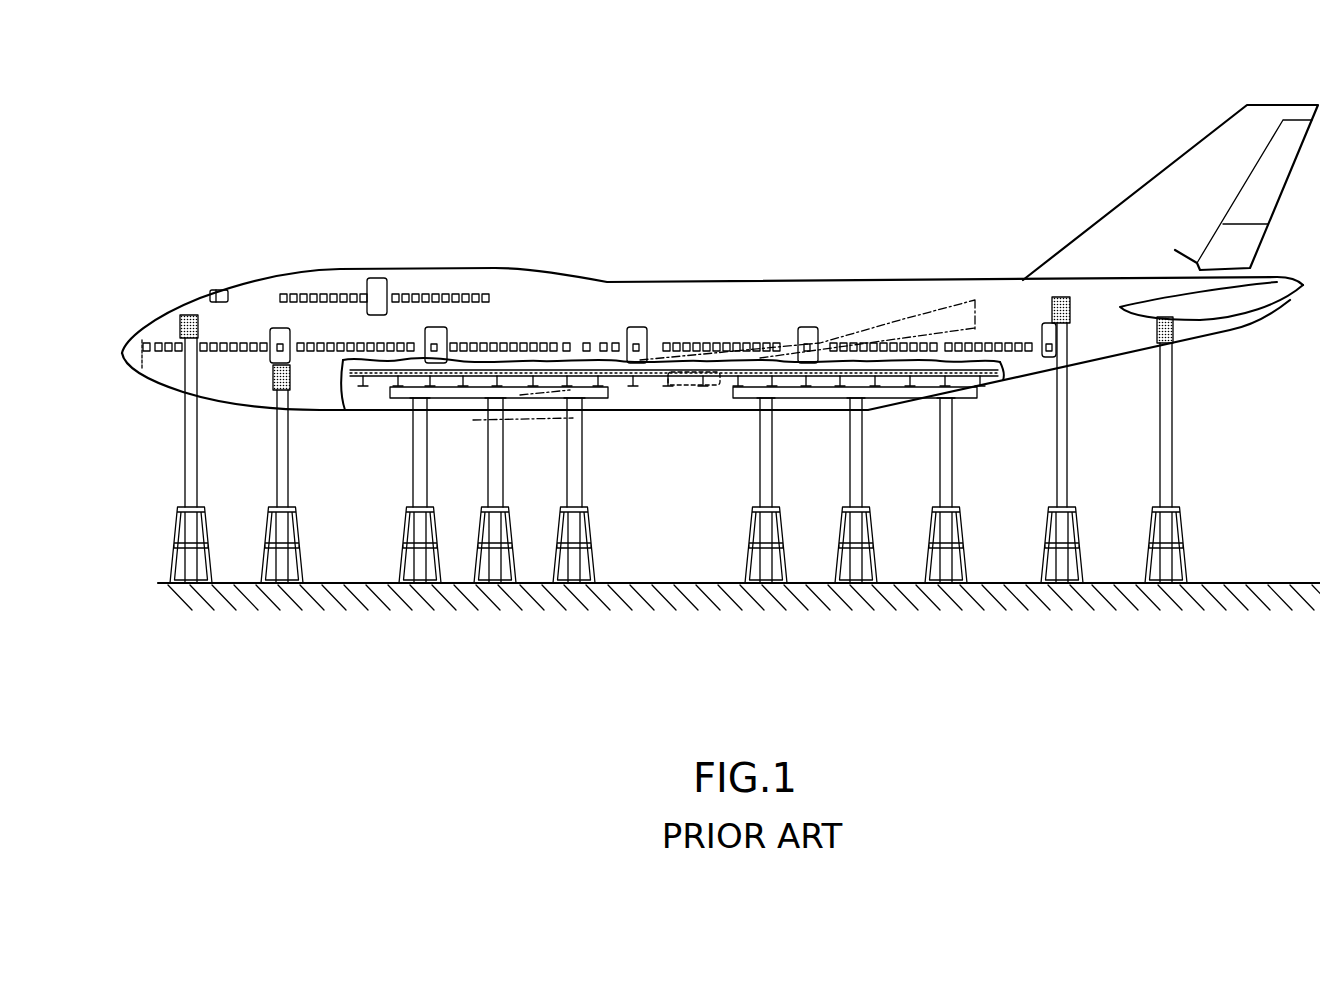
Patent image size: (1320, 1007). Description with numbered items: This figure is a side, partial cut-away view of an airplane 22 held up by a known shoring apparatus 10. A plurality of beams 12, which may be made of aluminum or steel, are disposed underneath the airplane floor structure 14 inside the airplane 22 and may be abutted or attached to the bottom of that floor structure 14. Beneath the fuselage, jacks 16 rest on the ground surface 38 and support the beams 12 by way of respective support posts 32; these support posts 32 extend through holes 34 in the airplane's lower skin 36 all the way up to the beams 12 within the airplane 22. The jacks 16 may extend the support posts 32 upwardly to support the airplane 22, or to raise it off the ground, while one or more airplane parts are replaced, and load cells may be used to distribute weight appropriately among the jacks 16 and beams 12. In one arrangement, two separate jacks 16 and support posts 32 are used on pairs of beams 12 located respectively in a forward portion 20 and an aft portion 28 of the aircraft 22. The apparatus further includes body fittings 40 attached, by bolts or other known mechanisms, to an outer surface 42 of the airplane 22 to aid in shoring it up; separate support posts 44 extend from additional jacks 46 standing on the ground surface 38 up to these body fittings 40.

The aircraft support system 10 is at (822, 633).
The beams 12 is at (500, 387).
The airplane floor structure 14 is at (597, 357).
The jacks 16 is at (590, 547).
The forward portion 20 is at (402, 282).
The airplane 22 is at (303, 291).
The aft portion 28 is at (905, 300).
The support posts 32 is at (427, 447).
The holes 34 is at (398, 400).
The lower skin 36 is at (472, 400).
The ground surface 38 is at (1262, 590).
The body fittings 40 is at (182, 318).
The outer surface 42 is at (245, 323).
The support posts 44 is at (182, 442).
The jacks 46 is at (168, 545).